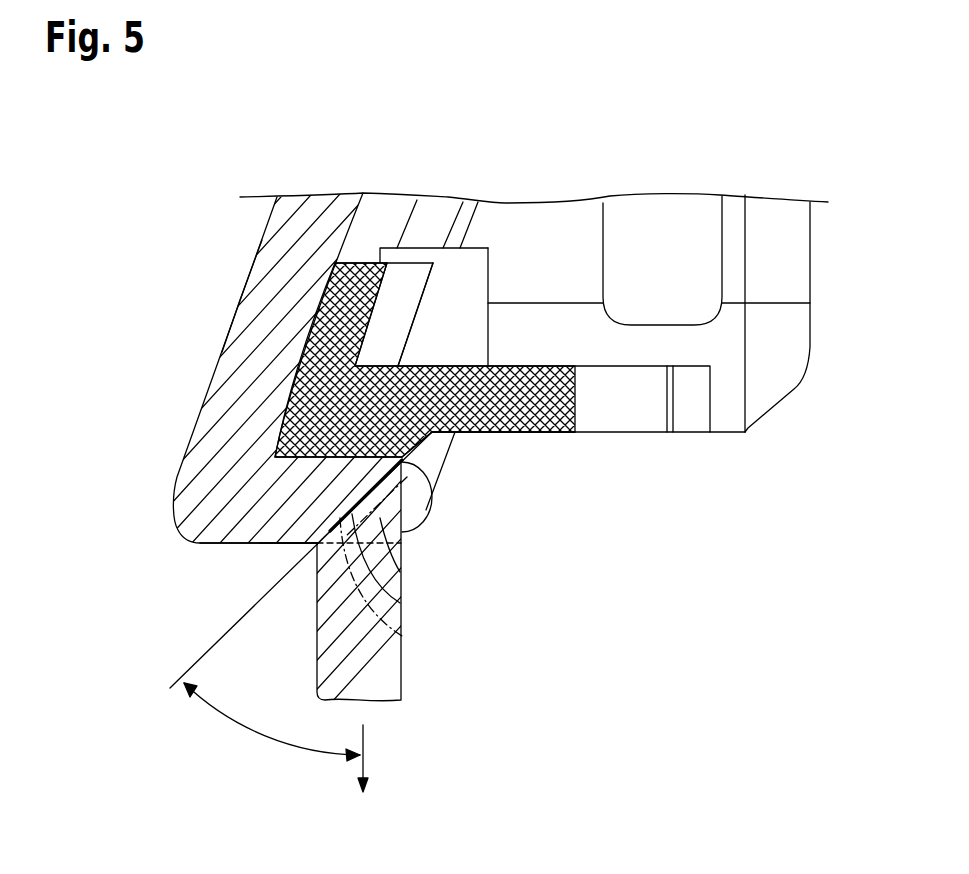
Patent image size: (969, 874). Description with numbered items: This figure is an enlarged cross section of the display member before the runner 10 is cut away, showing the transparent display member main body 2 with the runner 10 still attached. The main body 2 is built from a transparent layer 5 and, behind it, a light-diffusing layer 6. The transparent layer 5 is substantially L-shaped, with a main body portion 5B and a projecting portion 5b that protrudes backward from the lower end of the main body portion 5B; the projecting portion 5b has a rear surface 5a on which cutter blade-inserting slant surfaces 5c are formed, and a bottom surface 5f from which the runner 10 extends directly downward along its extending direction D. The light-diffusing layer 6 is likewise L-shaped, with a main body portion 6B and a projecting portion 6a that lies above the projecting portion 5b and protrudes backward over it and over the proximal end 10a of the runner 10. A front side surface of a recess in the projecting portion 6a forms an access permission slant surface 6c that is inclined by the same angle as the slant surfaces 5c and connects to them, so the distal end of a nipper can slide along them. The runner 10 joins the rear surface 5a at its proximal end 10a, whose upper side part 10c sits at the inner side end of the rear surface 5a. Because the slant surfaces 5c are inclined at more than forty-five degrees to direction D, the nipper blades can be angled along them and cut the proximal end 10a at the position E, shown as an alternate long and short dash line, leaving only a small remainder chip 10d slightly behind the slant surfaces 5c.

The display member main body 2 is at (422, 142).
The transparent layer 5 is at (297, 232).
The main body portion 5B is at (253, 303).
The rear surface 5a is at (352, 503).
The cutter blade-inserting slant surface 5c is at (376, 507).
The bottom surface 5f is at (252, 546).
The projecting portion 5b is at (297, 522).
The light-diffusing layer 6 is at (357, 262).
The main body portion 6B is at (368, 298).
The projecting portion 6a is at (523, 397).
The access permission slant surface 6c is at (410, 446).
The runner 10 is at (392, 684).
The upper side part 10c is at (430, 508).
The proximal end 10a is at (400, 572).
The remainder chip 10d is at (400, 603).
The cutting position E is at (402, 636).
The extending direction D is at (377, 758).